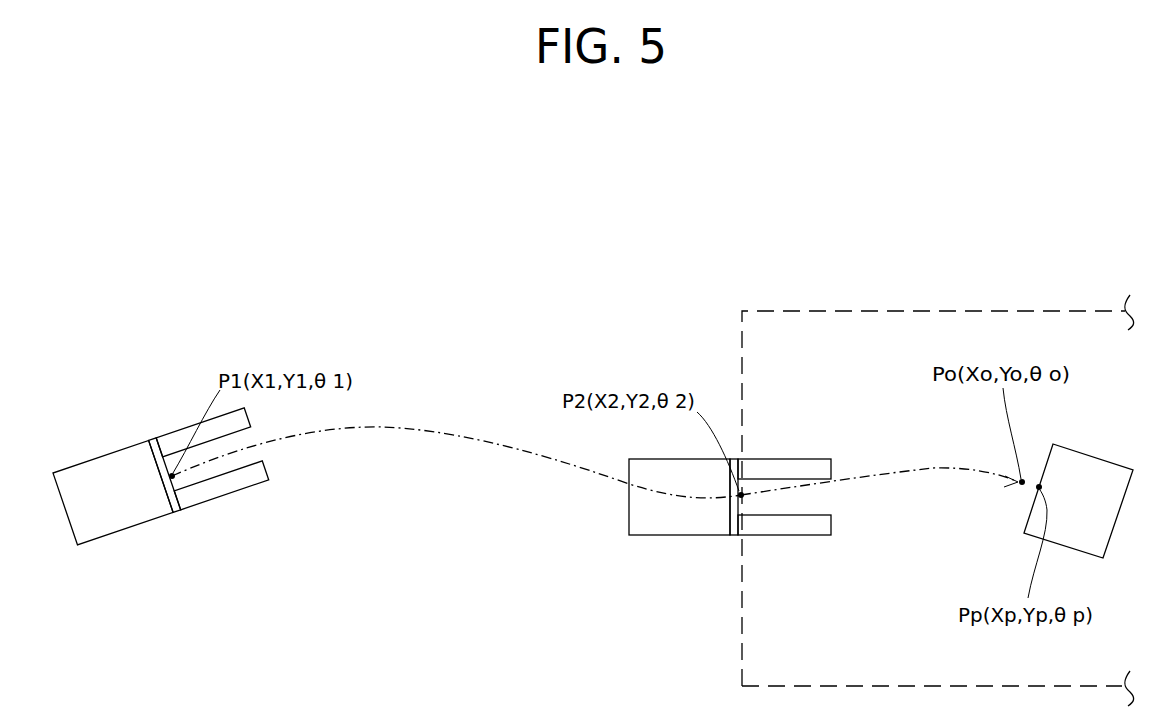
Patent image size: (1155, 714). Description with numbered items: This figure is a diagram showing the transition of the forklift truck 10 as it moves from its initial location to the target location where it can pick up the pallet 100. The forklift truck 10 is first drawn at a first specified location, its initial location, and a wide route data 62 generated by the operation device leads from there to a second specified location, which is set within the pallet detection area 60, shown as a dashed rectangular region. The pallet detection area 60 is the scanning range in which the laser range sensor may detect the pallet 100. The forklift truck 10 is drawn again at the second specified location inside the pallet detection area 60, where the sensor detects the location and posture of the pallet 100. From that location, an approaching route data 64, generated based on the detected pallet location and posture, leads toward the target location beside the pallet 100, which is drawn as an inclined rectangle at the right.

The forklift truck 10 is at (102, 448).
The pallet detection area 60 is at (856, 310).
The wide route data 62 is at (403, 428).
The approaching route data 64 is at (937, 470).
The pallet 100 is at (1093, 450).